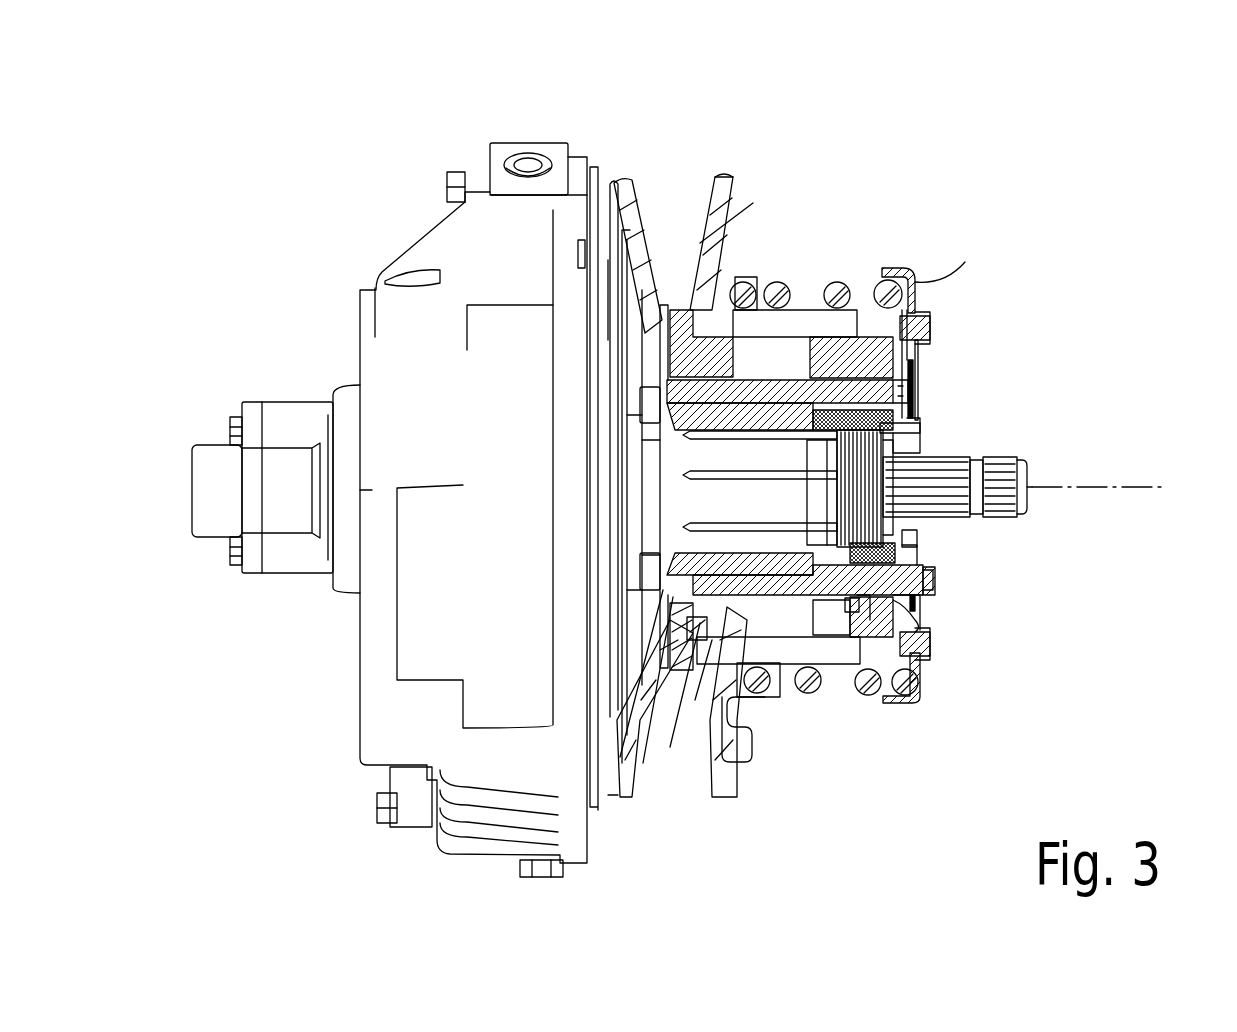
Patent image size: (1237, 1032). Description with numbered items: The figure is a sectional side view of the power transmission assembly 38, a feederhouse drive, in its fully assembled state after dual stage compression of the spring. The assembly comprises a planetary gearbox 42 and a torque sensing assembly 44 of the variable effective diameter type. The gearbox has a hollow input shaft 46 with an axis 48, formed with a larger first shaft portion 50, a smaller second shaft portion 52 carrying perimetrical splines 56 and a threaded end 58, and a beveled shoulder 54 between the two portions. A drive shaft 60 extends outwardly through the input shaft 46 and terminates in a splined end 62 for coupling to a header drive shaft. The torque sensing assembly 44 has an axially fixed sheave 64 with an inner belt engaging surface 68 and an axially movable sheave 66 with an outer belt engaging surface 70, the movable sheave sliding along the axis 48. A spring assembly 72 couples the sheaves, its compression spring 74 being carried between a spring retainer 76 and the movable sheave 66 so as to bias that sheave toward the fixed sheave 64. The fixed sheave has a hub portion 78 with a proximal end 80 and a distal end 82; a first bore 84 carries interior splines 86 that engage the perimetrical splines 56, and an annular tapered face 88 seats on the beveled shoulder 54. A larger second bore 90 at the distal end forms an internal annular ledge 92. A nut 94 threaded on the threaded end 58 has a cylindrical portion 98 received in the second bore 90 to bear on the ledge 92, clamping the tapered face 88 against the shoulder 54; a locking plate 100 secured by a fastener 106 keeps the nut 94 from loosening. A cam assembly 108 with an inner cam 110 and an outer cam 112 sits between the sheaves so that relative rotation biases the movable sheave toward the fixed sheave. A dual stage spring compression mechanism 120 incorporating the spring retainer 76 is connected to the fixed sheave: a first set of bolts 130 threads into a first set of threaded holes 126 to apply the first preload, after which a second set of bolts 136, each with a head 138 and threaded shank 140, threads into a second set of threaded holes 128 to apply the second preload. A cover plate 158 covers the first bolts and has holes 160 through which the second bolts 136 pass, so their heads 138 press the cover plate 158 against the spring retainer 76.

The power transmission assembly 38 is at (265, 178).
The planetary gearbox 42 is at (508, 140).
The cam assembly 108 is at (660, 317).
The torque sensing assembly 44 is at (745, 130).
The second shaft portion 52 is at (665, 380).
The annular tapered face 88 is at (665, 405).
The inner cam 110 is at (690, 415).
The internal annular ledge 92 is at (807, 345).
The outer cam 112 is at (861, 338).
The spring assembly 72 is at (828, 180).
The compression spring 74 is at (778, 282).
The hub portion 78 is at (750, 284).
The inner belt engaging surface 68 is at (650, 225).
The outer belt engaging surface 70 is at (700, 210).
The first set of threaded holes 126 is at (746, 245).
The axially fixed sheave 64 is at (623, 803).
The axially movable sheave 66 is at (727, 803).
The first bore 84 is at (733, 707).
The threaded shank 140 is at (688, 692).
The second set of threaded holes 128 is at (672, 738).
The perimetrical splines 56 is at (707, 503).
The beveled shoulder 54 is at (610, 452).
The first shaft portion 50 is at (643, 600).
The proximal end 80 is at (648, 423).
The spring retainer 76 is at (926, 284).
The dual stage spring compression mechanism 120 is at (907, 237).
The fastener 106 is at (935, 332).
The second bore 90 is at (923, 698).
The locking plate 100 is at (925, 378).
The first set of bolts 130 is at (925, 392).
The distal end 82 is at (912, 421).
The nut 94 is at (928, 434).
The threaded end 58 is at (900, 518).
The input shaft 46 is at (915, 530).
The drive shaft 60 is at (1030, 470).
The splined end 62 is at (1010, 440).
The axis 48 is at (1158, 483).
The holes 160 is at (935, 572).
The second set of bolts 136 is at (965, 574).
The head 138 is at (937, 583).
The cover plate 158 is at (930, 607).
The interior splines 86 is at (850, 592).
The cylindrical portion 98 is at (858, 600).